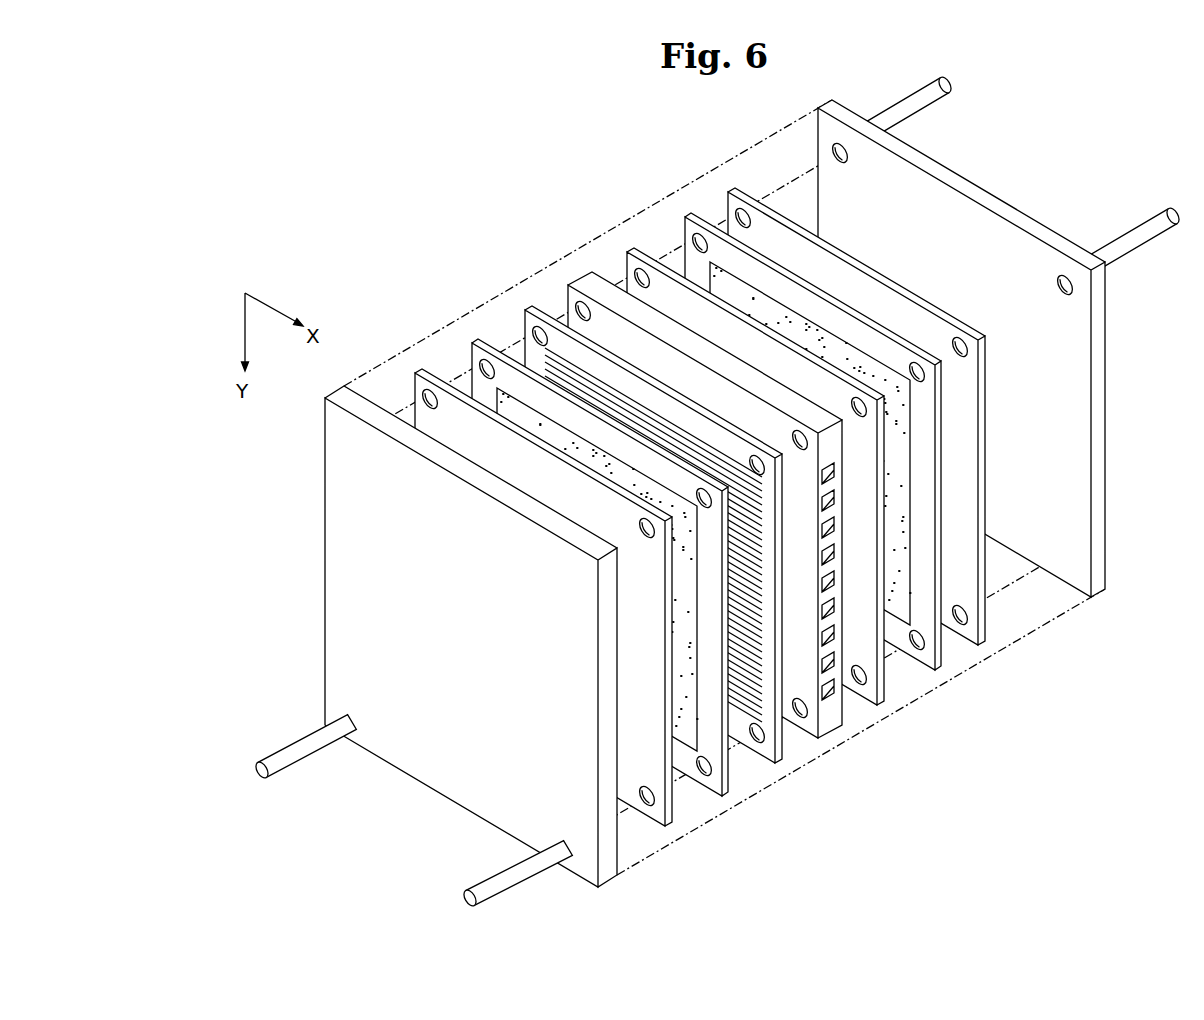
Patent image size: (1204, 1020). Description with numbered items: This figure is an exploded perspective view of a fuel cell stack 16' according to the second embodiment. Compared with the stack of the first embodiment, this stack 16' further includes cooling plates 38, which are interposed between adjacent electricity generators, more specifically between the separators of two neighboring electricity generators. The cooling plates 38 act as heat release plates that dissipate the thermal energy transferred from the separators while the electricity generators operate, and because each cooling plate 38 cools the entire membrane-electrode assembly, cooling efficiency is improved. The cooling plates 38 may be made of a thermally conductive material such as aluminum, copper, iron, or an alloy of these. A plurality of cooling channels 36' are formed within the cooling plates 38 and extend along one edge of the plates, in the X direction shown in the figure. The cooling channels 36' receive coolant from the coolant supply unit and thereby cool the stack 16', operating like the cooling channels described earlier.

The stack 16' is at (1000, 328).
The cooling plate 38 is at (568, 285).
The cooling channel 36' is at (873, 619).